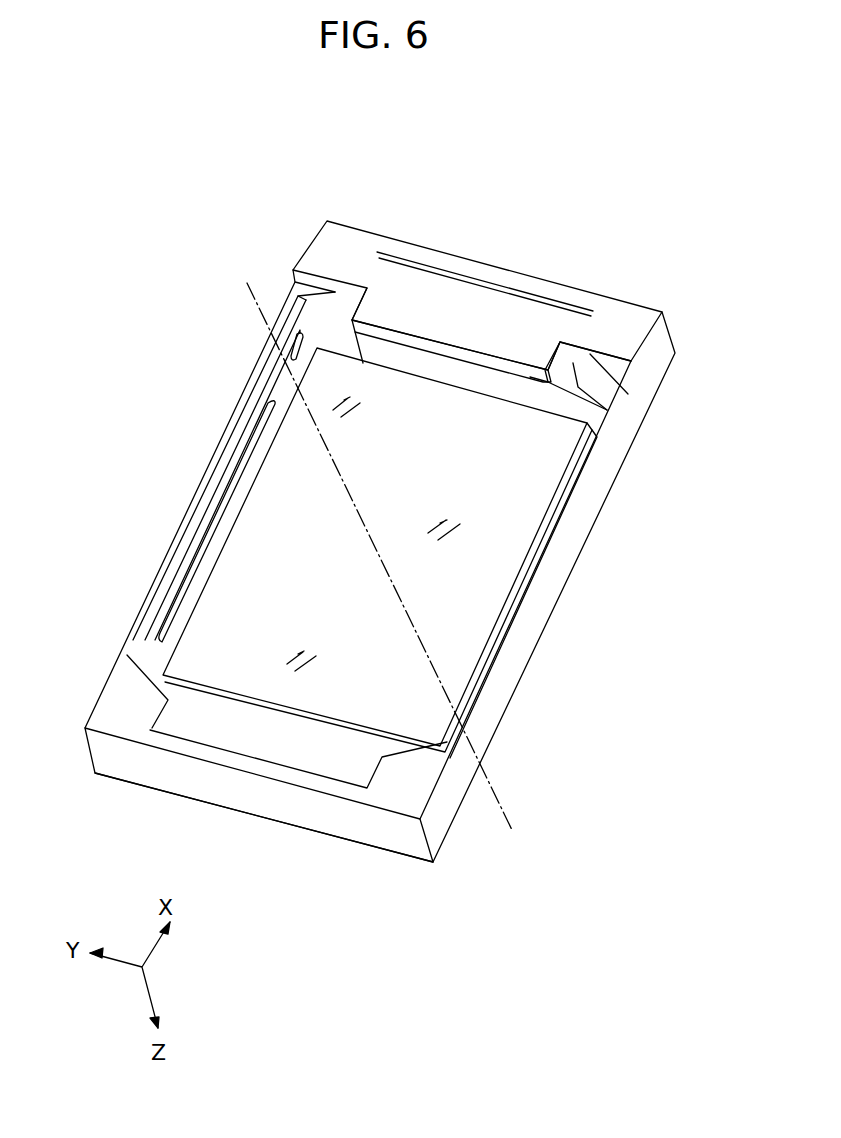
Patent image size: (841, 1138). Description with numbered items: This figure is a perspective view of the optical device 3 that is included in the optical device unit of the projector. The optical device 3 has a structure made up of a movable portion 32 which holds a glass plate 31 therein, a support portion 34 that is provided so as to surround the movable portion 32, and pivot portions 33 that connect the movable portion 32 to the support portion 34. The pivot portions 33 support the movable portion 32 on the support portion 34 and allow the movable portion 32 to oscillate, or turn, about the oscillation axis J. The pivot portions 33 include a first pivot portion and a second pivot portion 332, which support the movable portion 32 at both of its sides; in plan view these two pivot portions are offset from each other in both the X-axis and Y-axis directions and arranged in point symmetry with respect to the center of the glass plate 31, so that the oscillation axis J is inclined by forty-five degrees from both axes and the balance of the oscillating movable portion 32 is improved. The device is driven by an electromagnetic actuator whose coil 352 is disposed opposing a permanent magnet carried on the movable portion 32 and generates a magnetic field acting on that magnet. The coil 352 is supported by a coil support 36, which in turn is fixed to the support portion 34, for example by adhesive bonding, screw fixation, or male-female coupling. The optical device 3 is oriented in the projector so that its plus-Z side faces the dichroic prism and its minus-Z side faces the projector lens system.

The optical device 3 is at (608, 188).
The glass plate 31 is at (483, 583).
The movable portion 32 is at (298, 748).
The pivot portions 33 is at (234, 466).
The second pivot portion 332 is at (280, 385).
The support portion 34 is at (345, 232).
The coil 352 is at (453, 370).
The coil support 36 is at (600, 335).
The oscillation axis J is at (366, 531).